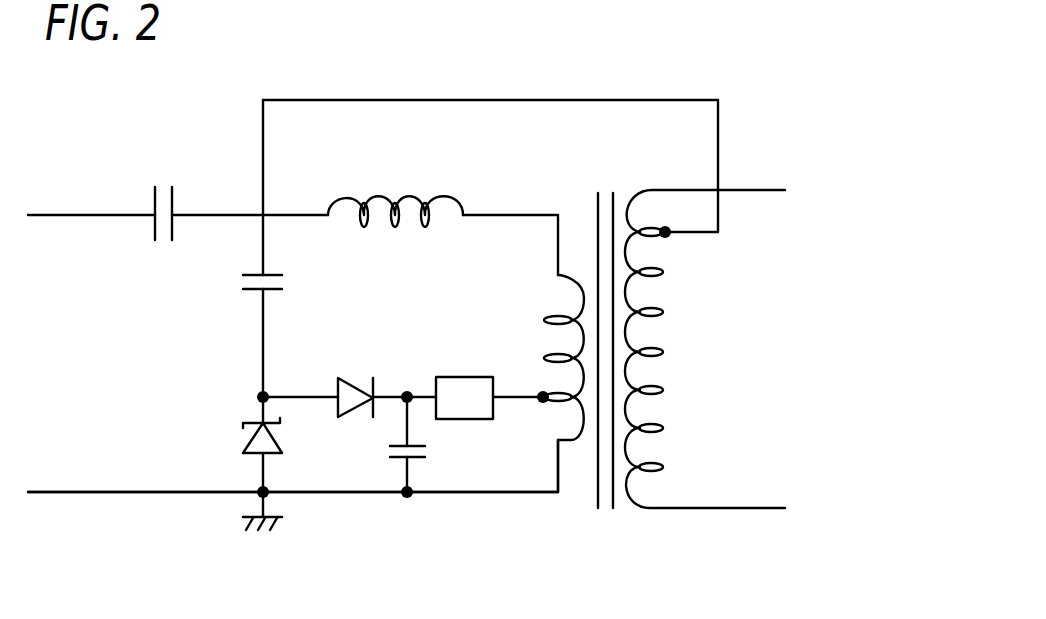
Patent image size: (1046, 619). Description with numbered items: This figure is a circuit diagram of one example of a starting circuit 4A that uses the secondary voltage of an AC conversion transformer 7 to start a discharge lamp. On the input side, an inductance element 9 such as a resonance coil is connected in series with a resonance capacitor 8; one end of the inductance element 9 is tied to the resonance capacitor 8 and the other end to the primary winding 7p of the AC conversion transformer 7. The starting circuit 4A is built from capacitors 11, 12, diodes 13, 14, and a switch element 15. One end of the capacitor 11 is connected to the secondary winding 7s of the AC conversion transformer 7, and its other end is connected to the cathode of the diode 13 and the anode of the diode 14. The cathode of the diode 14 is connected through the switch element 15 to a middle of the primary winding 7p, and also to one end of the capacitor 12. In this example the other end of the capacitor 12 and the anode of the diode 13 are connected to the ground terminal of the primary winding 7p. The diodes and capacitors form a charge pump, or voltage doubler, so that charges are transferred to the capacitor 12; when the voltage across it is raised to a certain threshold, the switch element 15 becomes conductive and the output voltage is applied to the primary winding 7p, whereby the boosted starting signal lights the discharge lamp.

The resonance capacitor 8 is at (175, 200).
The inductance element 9 is at (448, 197).
The AC conversion transformer 7 is at (664, 306).
The primary winding 7p is at (577, 278).
The secondary winding 7s is at (698, 328).
The capacitor 11 is at (246, 292).
The diode 13 is at (255, 433).
The diode 14 is at (357, 382).
The switch element 15 is at (465, 377).
The capacitor 12 is at (393, 461).
The starting circuit 4A is at (487, 502).